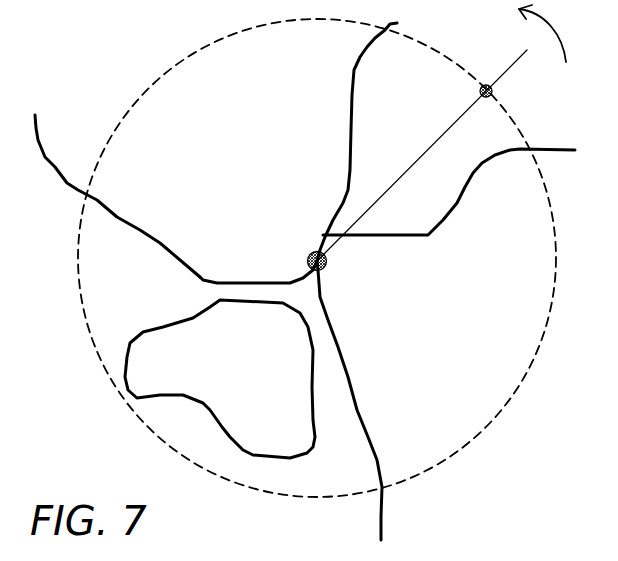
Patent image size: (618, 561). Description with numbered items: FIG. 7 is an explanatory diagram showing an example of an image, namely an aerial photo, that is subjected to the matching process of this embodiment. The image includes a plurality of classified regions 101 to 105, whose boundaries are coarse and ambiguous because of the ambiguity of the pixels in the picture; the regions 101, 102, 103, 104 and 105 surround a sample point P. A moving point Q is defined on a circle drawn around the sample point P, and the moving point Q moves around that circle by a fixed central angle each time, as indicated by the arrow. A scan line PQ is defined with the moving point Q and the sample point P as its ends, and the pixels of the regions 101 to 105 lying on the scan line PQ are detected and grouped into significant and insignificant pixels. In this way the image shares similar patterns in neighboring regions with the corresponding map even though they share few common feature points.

The classified region 101 is at (446, 142).
The classified region 102 is at (140, 196).
The classified region 103 is at (218, 293).
The classified region 104 is at (220, 379).
The classified region 105 is at (386, 400).
The sample point P is at (418, 167).
The moving point Q is at (501, 96).